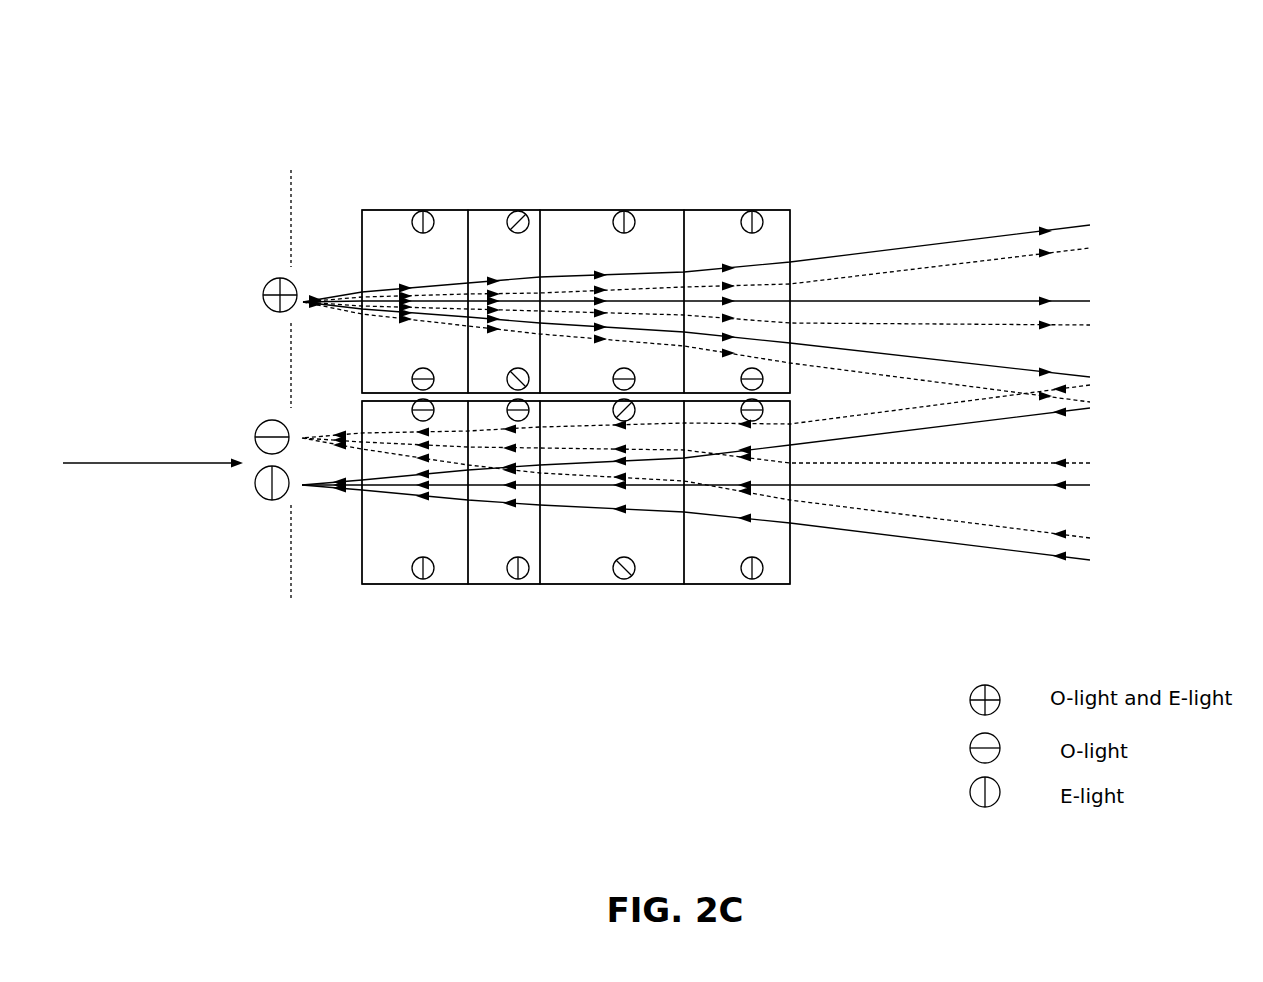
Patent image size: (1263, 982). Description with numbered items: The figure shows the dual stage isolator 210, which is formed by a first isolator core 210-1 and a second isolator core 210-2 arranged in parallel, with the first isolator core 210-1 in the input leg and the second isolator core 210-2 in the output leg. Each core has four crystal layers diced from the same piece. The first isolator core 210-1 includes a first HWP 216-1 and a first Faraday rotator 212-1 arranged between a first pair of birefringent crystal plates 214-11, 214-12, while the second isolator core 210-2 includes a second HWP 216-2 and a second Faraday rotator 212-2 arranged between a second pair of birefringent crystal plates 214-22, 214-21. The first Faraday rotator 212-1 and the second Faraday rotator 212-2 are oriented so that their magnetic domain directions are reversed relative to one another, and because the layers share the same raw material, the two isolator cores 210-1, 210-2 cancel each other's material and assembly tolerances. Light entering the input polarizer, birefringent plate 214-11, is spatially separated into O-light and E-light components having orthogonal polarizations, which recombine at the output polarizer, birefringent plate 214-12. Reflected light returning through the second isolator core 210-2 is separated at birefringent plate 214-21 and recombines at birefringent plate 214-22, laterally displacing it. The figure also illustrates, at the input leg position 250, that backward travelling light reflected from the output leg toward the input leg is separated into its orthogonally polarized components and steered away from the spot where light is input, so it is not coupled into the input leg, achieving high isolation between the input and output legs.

The dual stage isolator 210 is at (228, 58).
The first isolator core 210-1 is at (790, 719).
The second isolator core 210-2 is at (790, 86).
The first Faraday rotator 212-1 is at (635, 622).
The second Faraday rotator 212-2 is at (640, 172).
The birefringent crystal plate 214-11 is at (418, 622).
The birefringent crystal plate 214-12 is at (755, 622).
The birefringent crystal plate 214-21 is at (765, 172).
The birefringent crystal plate 214-22 is at (422, 172).
The first HWP 216-1 is at (518, 622).
The second HWP 216-2 is at (522, 172).
The input leg position 250 is at (153, 506).